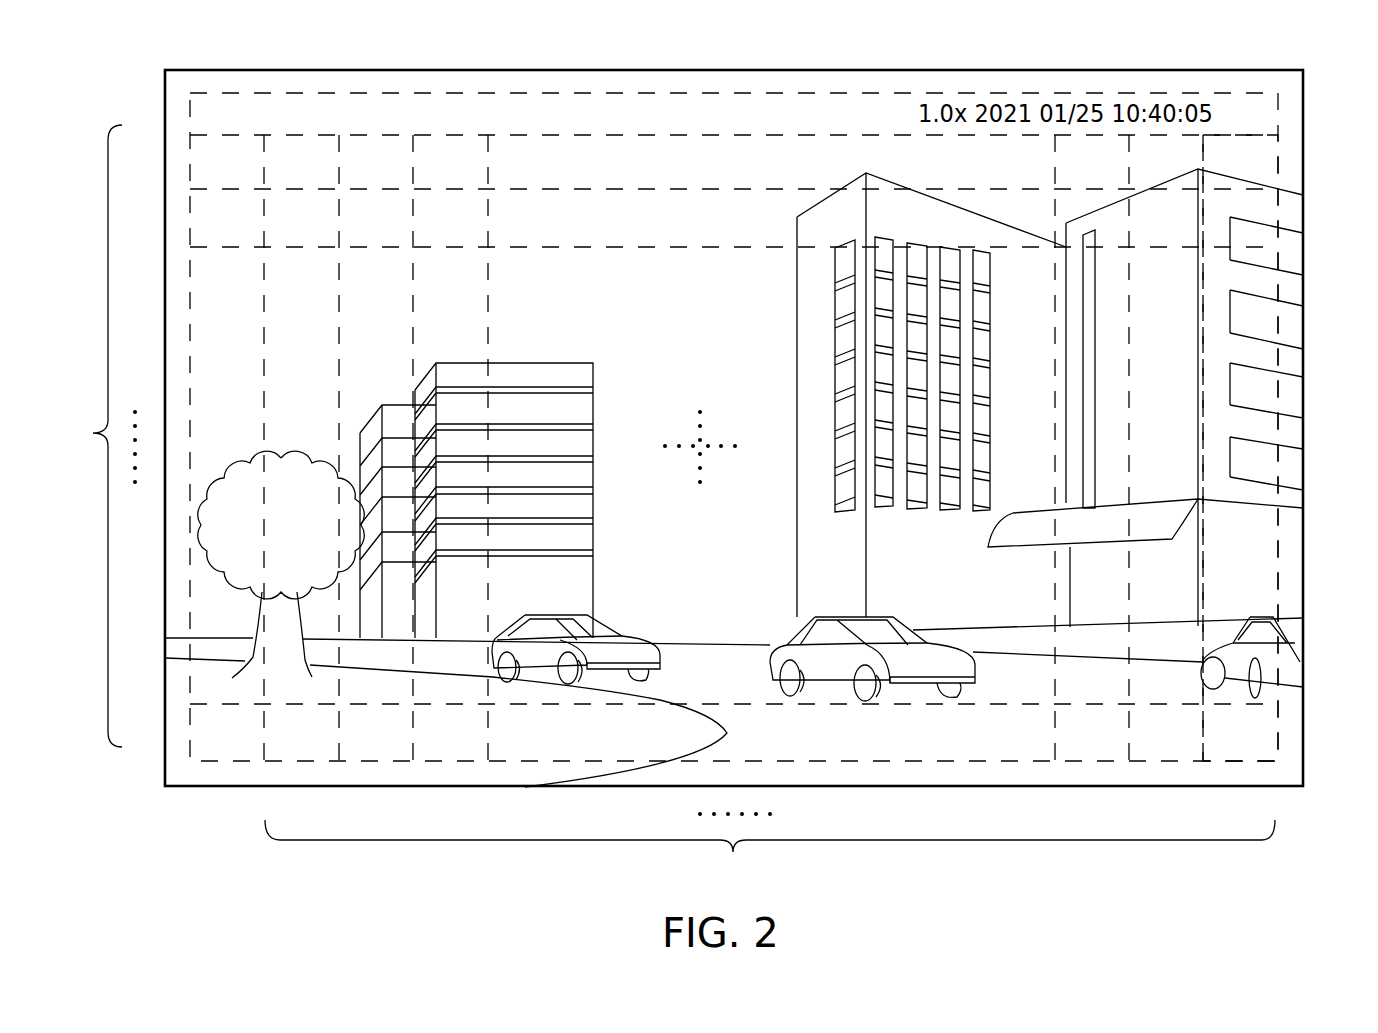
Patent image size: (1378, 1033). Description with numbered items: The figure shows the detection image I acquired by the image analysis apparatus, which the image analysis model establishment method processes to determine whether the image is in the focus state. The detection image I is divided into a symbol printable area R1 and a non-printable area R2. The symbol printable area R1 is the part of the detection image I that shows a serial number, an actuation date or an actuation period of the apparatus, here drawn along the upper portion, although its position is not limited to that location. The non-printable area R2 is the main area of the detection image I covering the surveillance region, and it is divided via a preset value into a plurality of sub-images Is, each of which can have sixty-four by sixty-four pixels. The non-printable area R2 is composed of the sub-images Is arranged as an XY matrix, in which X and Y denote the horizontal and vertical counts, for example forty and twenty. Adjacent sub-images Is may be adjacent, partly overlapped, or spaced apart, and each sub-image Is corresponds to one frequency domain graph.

The detection image I is at (104, 70).
The symbol printable area R1 is at (1297, 116).
The non-printable area R2 is at (1304, 358).
The sub-image Is is at (210, 166).
The number of sub-images in horizontal direction of the XY matrix X is at (770, 849).
The number of sub-images in vertical direction of the XY matrix Y is at (101, 436).